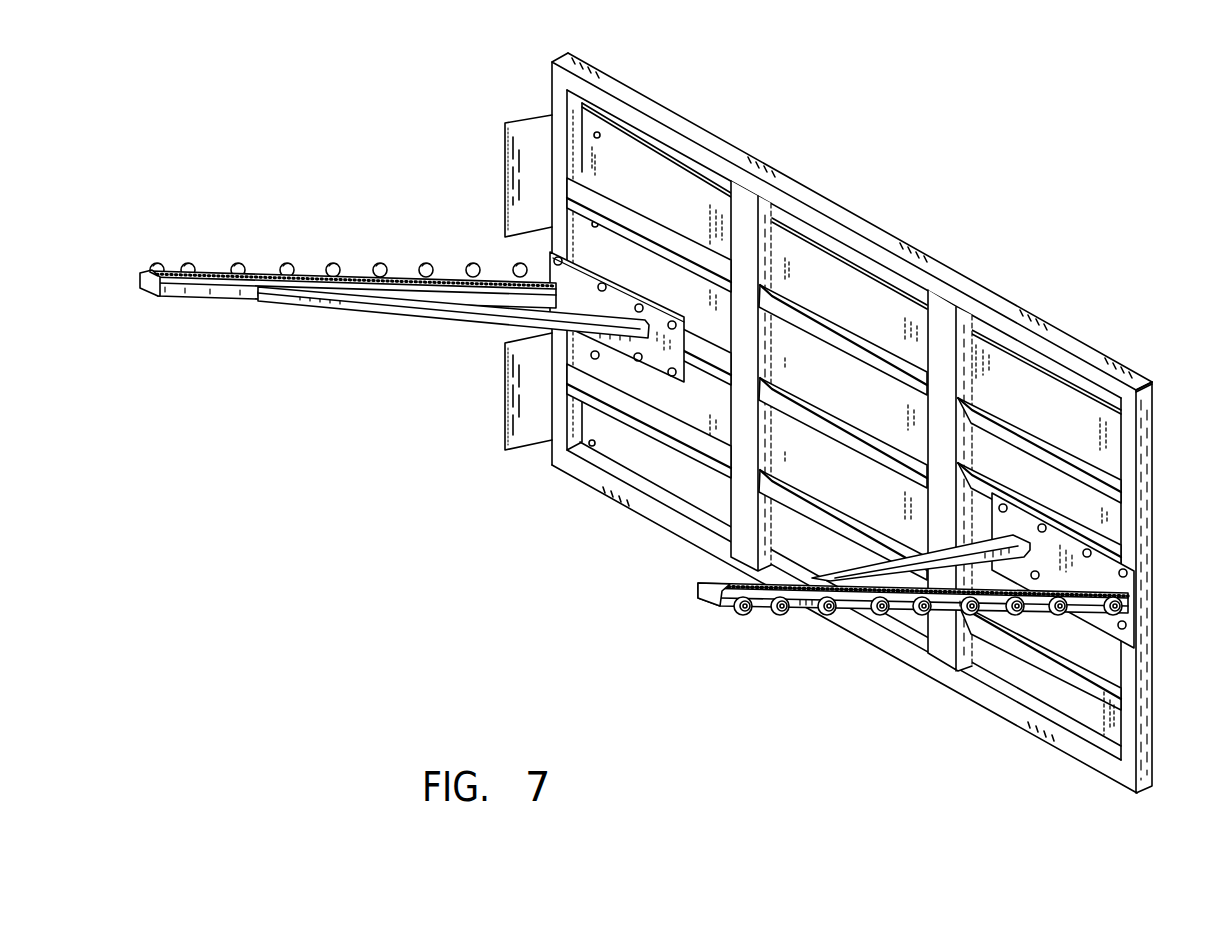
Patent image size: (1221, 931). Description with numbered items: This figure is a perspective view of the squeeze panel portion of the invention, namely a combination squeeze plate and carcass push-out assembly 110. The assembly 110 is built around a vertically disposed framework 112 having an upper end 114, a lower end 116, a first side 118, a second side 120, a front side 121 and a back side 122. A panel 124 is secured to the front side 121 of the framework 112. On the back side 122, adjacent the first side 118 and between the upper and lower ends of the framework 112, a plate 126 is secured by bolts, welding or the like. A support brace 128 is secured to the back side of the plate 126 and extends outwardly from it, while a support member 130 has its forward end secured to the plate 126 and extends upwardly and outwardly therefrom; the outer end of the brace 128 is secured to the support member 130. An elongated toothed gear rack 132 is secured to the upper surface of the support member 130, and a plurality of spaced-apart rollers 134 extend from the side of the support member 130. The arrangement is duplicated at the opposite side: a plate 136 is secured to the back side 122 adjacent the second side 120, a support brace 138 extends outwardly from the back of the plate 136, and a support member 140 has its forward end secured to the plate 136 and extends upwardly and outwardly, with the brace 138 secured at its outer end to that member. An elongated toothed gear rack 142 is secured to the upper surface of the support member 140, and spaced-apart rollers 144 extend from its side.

The combination squeeze plate and carcass push-out assembly 110 is at (957, 233).
The framework 112 is at (1068, 312).
The upper end 114 is at (833, 206).
The lower end 116 is at (948, 670).
The first side 118 is at (1148, 520).
The second side 120 is at (548, 84).
The front side 121 is at (1141, 360).
The back side 122 is at (625, 513).
The panel 124 is at (1088, 438).
The plate 126 is at (1135, 584).
The support brace 128 is at (978, 522).
The support member 130 is at (856, 614).
The elongated toothed gear rack 132 is at (733, 583).
The rollers 134 is at (779, 615).
The plate 136 is at (627, 302).
The support brace 138 is at (432, 313).
The support member 140 is at (223, 297).
The elongated toothed gear rack 142 is at (408, 266).
The rollers 144 is at (288, 261).